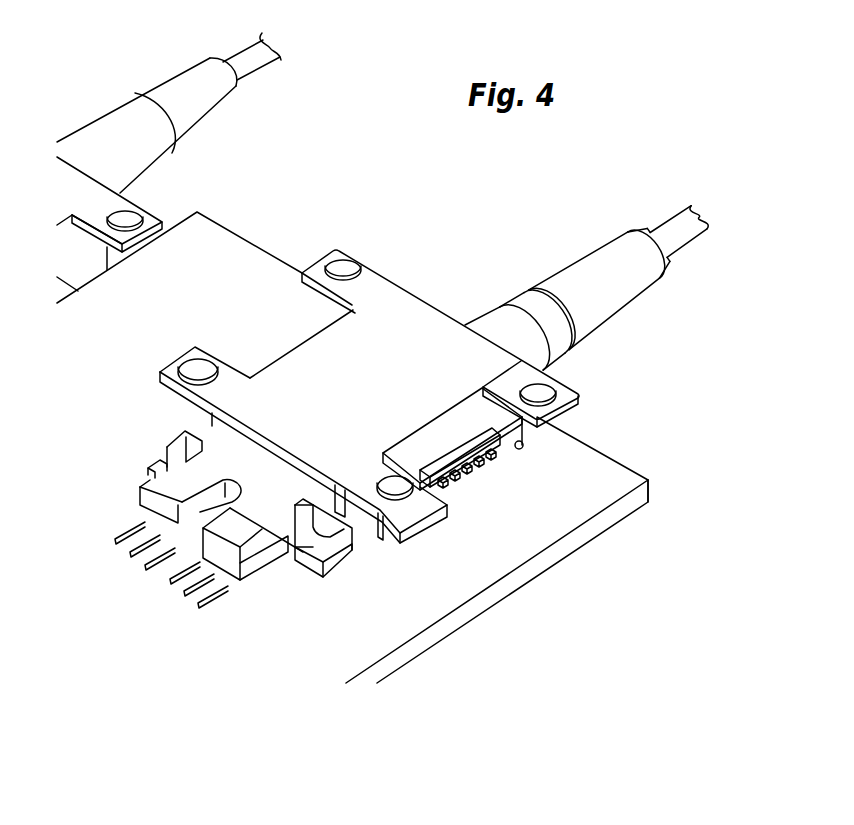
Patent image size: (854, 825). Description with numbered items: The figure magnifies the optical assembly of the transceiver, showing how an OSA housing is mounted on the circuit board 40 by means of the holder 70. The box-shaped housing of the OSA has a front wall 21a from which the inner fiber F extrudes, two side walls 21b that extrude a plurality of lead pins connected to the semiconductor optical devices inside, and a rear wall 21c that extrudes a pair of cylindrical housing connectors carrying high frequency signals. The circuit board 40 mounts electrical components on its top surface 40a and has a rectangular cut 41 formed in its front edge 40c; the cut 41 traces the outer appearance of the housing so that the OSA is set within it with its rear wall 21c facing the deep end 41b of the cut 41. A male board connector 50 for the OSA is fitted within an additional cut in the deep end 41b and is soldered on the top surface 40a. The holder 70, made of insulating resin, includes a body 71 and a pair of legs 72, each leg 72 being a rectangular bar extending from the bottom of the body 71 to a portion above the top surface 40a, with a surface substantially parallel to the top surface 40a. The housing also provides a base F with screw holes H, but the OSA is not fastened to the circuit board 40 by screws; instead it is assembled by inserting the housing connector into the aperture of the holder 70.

The front wall 21a is at (169, 113).
The side walls 21b is at (465, 423).
The rear wall 21c is at (586, 288).
The circuit board 40 is at (618, 458).
The top surface 40a is at (535, 538).
The front edge 40c is at (266, 250).
The rectangular cut 41 is at (104, 268).
The deep end 41b is at (318, 583).
The board connector 50 is at (135, 512).
The holder 70 is at (323, 513).
The body 71 is at (240, 450).
The legs 72 is at (175, 482).
The base F is at (388, 280).
The screw holes H is at (340, 270).